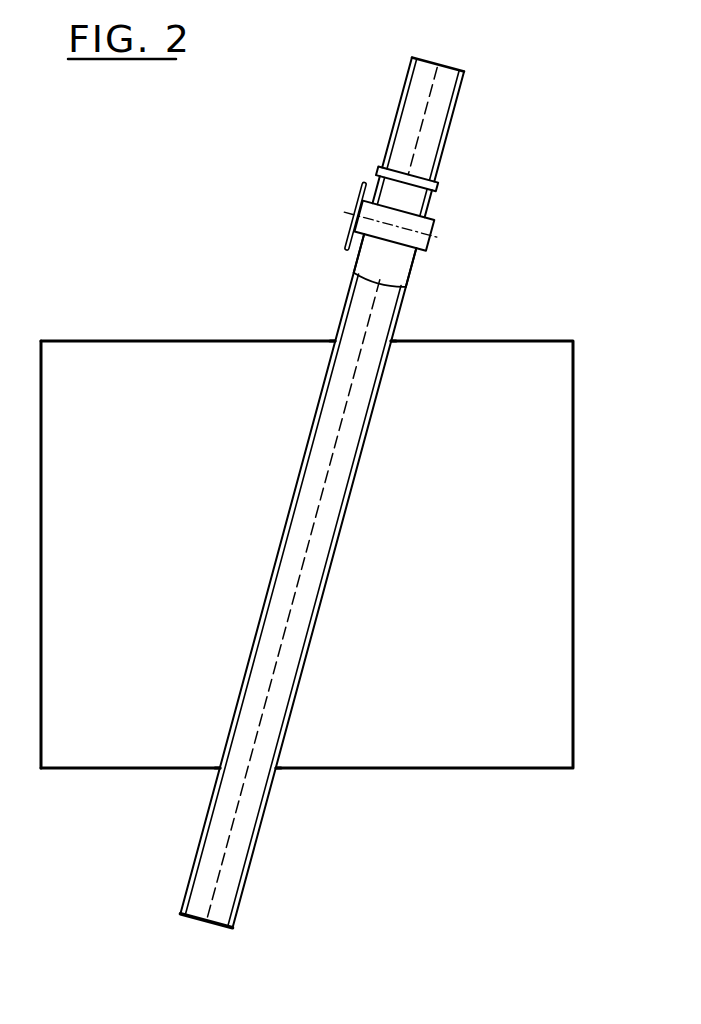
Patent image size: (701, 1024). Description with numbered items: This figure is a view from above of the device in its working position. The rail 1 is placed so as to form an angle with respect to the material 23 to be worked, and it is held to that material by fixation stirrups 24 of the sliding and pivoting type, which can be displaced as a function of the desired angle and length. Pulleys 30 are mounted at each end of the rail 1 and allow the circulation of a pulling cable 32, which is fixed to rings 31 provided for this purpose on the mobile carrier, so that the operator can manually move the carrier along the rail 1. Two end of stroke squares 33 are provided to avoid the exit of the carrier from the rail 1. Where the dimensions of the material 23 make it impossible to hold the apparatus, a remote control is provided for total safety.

The rail 1 is at (427, 73).
The material to be worked 23 is at (573, 385).
The fixation stirrups 24 is at (335, 340).
The pulleys 30 is at (440, 58).
The rings 31 is at (380, 284).
The pulling cable 32 is at (428, 106).
The end of stroke squares 33 is at (181, 915).